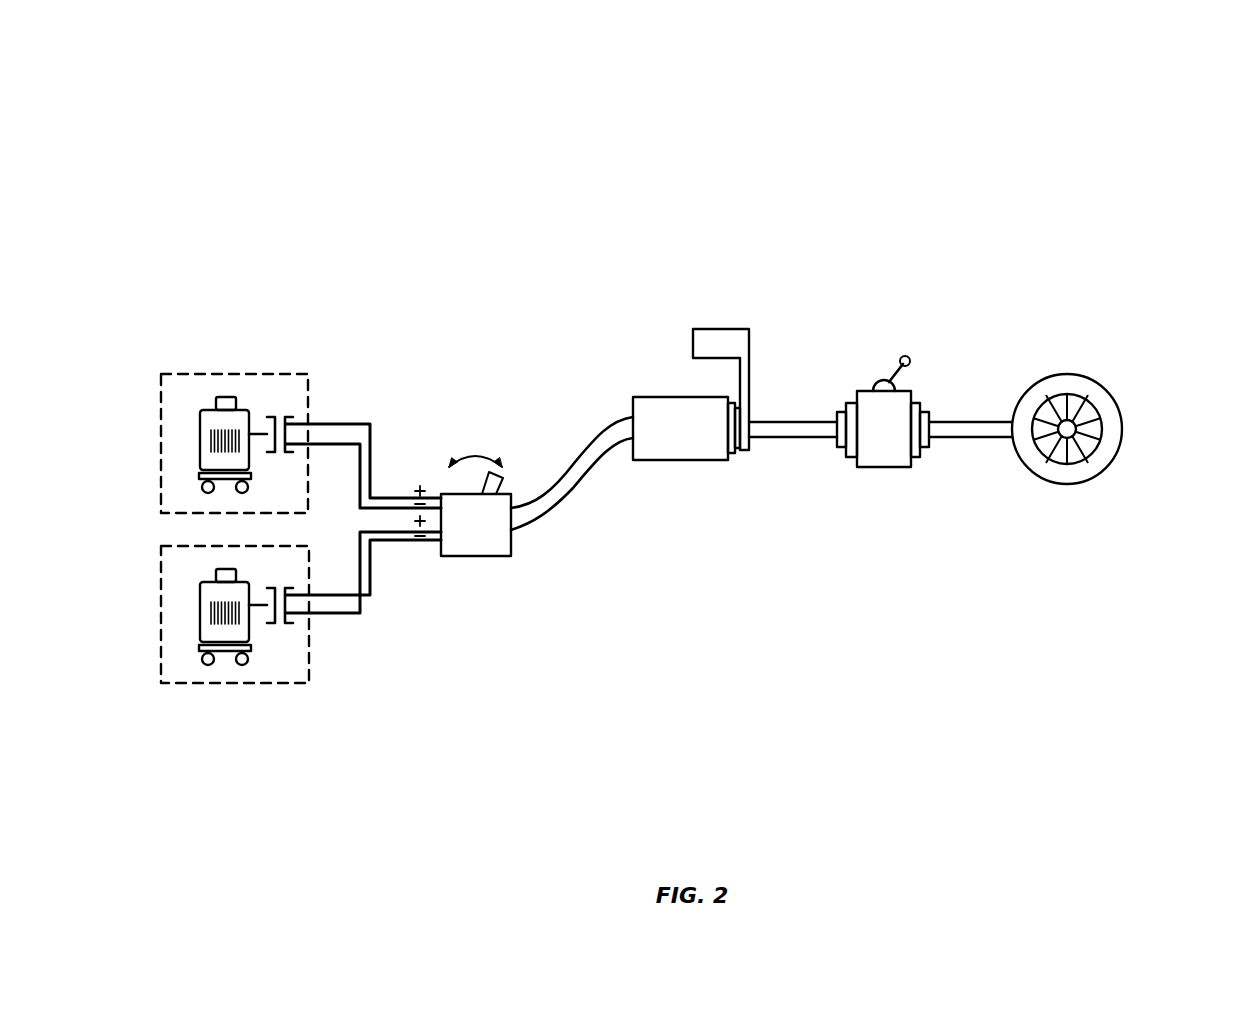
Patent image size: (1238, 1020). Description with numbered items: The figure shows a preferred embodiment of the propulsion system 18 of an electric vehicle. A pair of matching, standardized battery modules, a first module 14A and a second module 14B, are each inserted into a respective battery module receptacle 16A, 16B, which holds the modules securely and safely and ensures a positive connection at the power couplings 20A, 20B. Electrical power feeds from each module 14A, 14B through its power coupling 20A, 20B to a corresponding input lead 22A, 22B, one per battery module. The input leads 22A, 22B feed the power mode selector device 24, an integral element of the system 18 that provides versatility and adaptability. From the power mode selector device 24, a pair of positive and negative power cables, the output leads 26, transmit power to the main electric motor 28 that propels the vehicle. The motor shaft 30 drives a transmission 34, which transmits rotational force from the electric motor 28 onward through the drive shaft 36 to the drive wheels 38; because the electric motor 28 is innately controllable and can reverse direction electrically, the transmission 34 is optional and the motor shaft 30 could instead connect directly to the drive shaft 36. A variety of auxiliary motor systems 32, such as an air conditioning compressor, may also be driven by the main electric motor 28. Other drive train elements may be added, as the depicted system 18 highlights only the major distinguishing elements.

The first module 14A is at (196, 382).
The second module 14B is at (180, 662).
The battery module receptacle 16A is at (239, 347).
The battery module receptacle 16B is at (232, 695).
The propulsion system 18 is at (1137, 167).
The power coupling 20A is at (304, 357).
The power coupling 20B is at (294, 704).
The input lead 22A is at (384, 573).
The input lead 22B is at (375, 631).
The power mode selector device 24 is at (470, 378).
The output leads 26 is at (572, 522).
The main electric motor 28 is at (686, 494).
The motor shaft 30 is at (798, 529).
The auxiliary motor systems 32 is at (694, 304).
The transmission 34 is at (913, 345).
The drive shaft 36 is at (970, 502).
The drive wheels 38 is at (1081, 520).